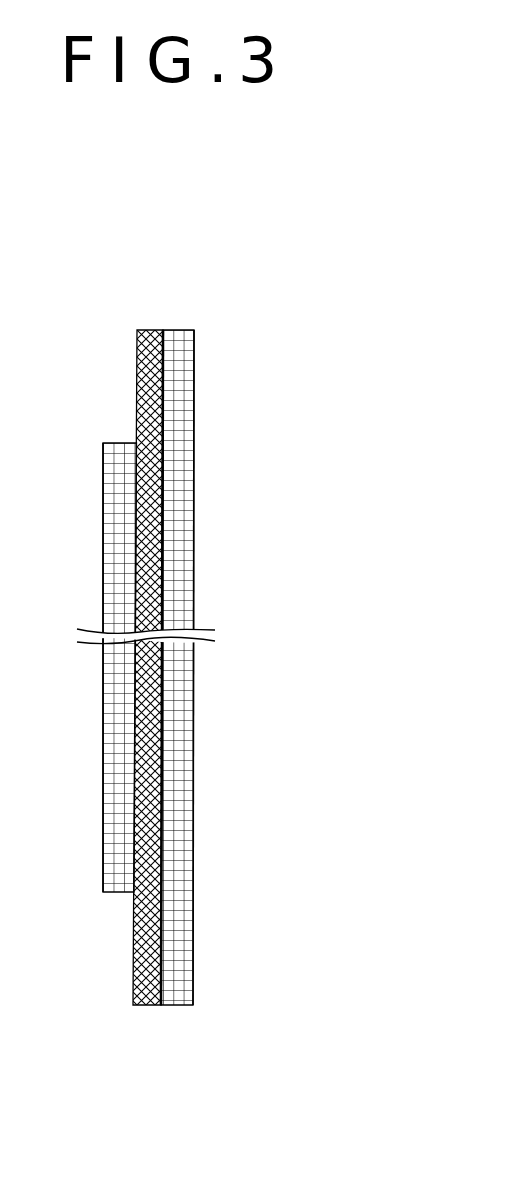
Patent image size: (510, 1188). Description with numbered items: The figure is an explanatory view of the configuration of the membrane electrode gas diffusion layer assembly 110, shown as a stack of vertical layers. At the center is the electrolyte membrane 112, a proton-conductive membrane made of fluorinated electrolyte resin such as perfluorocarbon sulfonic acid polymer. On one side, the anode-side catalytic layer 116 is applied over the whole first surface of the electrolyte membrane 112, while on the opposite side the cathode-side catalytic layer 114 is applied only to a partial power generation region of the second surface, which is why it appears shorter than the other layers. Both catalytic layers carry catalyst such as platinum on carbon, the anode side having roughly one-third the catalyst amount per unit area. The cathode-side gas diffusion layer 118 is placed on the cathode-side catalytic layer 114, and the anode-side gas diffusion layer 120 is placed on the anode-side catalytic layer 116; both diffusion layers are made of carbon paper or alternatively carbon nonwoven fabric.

The membrane electrode gas diffusion layer assembly 110 is at (55, 340).
The electrolyte membrane 112 is at (150, 329).
The cathode-side catalytic layer 114 is at (133, 443).
The anode-side catalytic layer 116 is at (164, 329).
The cathode-side gas diffusion layer 118 is at (103, 499).
The anode-side gas diffusion layer 120 is at (193, 499).